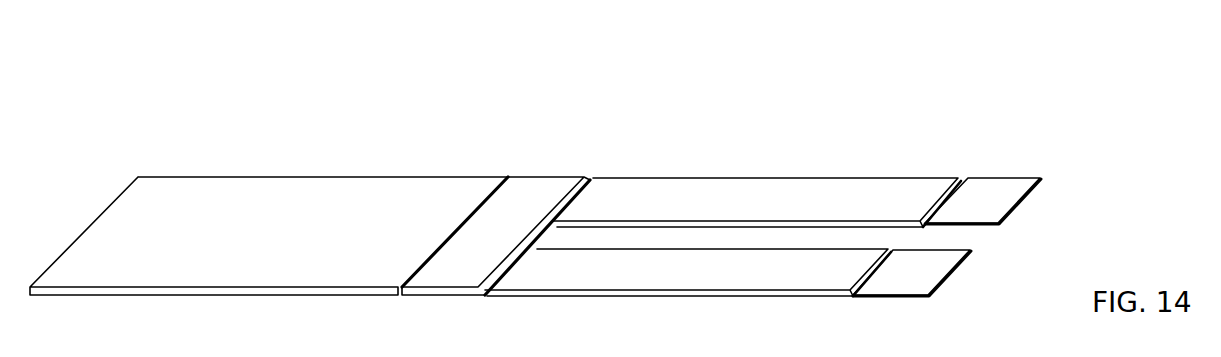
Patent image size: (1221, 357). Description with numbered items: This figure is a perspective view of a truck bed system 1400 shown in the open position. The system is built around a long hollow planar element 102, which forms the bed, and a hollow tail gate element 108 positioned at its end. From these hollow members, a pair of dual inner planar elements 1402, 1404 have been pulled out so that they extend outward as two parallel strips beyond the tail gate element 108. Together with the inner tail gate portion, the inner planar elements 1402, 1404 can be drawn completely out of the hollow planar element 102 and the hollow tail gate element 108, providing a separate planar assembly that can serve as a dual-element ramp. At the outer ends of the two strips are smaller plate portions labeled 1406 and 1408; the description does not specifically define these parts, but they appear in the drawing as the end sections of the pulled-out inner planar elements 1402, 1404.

The truck bed system 1400 is at (1062, 47).
The hollow planar element 102 is at (122, 177).
The hollow tail gate element 108 is at (556, 178).
The inner planar element 1402 is at (880, 178).
The inner planar element 1404 is at (833, 297).
The second contact pad 1406 is at (912, 297).
The first contact pad 1408 is at (1019, 178).